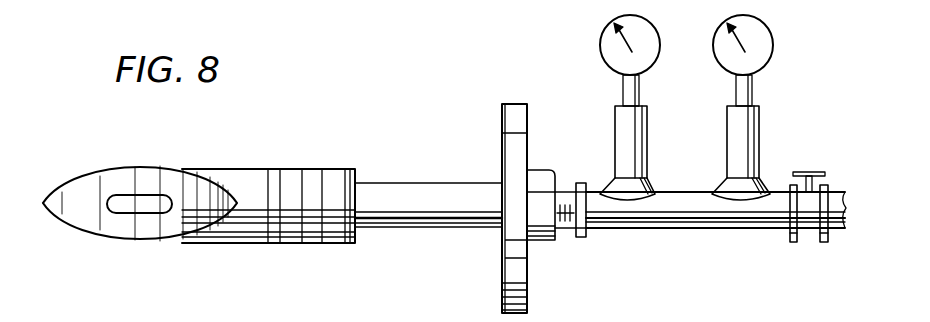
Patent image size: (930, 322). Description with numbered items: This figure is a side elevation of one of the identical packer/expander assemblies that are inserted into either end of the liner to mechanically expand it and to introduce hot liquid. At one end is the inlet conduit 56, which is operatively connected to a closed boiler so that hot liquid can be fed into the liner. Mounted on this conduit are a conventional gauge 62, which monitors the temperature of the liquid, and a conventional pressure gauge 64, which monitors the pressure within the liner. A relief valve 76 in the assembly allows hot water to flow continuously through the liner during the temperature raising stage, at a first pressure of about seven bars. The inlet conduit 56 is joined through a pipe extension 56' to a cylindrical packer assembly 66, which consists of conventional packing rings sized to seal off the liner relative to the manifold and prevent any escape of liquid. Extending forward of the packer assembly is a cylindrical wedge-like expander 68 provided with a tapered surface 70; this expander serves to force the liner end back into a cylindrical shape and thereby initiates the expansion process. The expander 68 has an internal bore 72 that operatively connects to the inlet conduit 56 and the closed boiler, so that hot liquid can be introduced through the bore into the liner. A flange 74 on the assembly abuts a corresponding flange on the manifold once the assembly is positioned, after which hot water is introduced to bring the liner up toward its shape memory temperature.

The inlet conduit 56 is at (716, 225).
The pipe extension 56' is at (428, 227).
The gauge 62 is at (758, 38).
The pressure gauge 64 is at (644, 28).
The cylindrical packer assembly 66 is at (355, 160).
The expander 68 is at (244, 243).
The tapered surface 70 is at (101, 231).
The internal bore 72 is at (140, 204).
The flange 74 is at (502, 276).
The relief valve 76 is at (807, 226).